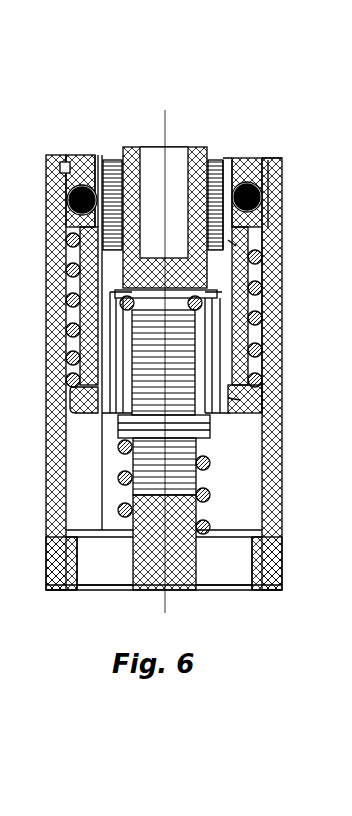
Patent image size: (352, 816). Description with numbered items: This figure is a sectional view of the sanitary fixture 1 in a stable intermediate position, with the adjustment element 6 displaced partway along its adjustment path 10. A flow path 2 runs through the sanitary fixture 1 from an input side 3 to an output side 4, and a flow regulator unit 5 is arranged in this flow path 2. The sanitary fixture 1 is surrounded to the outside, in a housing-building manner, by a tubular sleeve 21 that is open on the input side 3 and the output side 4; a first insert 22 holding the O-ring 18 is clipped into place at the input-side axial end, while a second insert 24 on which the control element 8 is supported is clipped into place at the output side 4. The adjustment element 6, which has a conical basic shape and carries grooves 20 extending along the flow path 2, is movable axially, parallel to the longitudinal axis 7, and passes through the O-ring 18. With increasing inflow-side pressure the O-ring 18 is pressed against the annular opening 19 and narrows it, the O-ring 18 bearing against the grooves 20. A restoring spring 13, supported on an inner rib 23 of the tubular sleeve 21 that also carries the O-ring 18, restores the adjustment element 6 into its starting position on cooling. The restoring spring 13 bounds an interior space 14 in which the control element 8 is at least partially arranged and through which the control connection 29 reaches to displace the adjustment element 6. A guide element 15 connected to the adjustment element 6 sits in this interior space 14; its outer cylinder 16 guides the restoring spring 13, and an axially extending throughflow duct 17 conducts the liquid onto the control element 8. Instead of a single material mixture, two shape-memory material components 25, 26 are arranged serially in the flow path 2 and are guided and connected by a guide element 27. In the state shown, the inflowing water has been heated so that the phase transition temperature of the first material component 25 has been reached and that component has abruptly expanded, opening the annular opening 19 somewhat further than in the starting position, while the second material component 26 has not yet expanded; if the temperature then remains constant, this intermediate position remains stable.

The sanitary fixture 1 is at (180, 365).
The flow path 2 is at (93, 585).
The input side 3 is at (128, 104).
The output side 4 is at (203, 606).
The flow regulator unit 5 is at (276, 200).
The adjustment element 6 is at (246, 158).
The longitudinal axis 7 is at (178, 250).
The control element 8 is at (240, 404).
The adjustment path 10 is at (100, 605).
The restoring spring 13 is at (245, 320).
The interior space 14 is at (70, 348).
The guide element 15 is at (206, 313).
The outer cylinder 16 is at (264, 333).
The throughflow duct 17 is at (236, 268).
The O-ring 18 is at (272, 186).
The annular opening 19 is at (234, 236).
The grooves 20 is at (210, 150).
The tubular sleeve 21 is at (270, 500).
The first insert 22 is at (265, 158).
The rib 23 is at (60, 216).
The second insert 24 is at (280, 585).
The first material component 25 is at (235, 292).
The second material component 26 is at (206, 458).
The guide element 27 is at (168, 475).
The control connection 29 is at (200, 150).